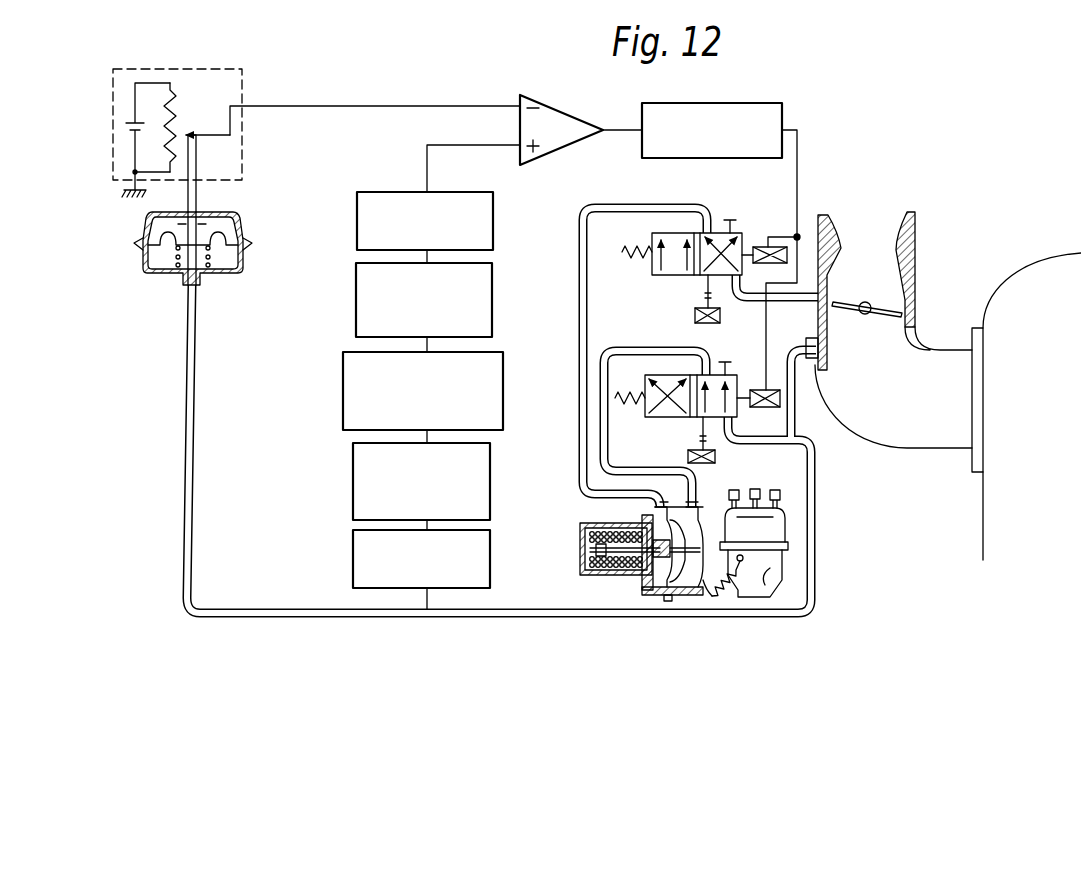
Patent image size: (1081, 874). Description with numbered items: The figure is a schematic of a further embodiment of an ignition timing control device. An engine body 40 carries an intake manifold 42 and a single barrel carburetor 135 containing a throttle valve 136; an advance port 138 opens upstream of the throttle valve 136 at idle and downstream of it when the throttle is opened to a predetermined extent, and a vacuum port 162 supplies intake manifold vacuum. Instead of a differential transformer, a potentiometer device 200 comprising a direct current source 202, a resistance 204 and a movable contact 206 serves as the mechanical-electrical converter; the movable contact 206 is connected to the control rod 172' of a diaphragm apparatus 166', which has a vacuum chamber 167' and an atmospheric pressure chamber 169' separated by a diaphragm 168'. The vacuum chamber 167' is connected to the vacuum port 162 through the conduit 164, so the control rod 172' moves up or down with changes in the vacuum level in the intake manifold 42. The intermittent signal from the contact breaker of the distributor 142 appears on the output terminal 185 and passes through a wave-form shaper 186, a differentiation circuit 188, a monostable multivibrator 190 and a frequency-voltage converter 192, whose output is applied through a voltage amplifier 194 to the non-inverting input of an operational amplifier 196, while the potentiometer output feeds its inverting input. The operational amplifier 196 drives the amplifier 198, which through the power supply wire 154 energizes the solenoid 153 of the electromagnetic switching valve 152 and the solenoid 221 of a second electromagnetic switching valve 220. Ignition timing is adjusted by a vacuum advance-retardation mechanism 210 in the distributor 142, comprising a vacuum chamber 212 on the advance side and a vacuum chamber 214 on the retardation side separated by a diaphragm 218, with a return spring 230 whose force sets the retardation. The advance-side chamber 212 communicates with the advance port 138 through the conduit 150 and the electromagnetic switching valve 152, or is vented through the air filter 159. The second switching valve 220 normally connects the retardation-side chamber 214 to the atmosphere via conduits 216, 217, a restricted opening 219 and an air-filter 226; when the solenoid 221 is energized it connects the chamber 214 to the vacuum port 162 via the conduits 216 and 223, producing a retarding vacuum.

The engine body 40 is at (1036, 272).
The intake manifold 42 is at (908, 446).
The carburetor 135 is at (873, 216).
The throttle valve 136 is at (897, 310).
The advance port 138 is at (831, 302).
The distributor 142 is at (770, 568).
The conduit 150 is at (838, 256).
The electromagnetic switching valve 152 is at (668, 280).
The solenoid 153 is at (763, 247).
The power supply wire 154 is at (799, 176).
The air filter 159 is at (720, 316).
The vacuum port 162 is at (812, 358).
The conduit 164 is at (600, 620).
The diaphragm apparatus 166' is at (190, 271).
The vacuum chamber 167' is at (227, 272).
The diaphragm 168' is at (236, 234).
The atmospheric pressure chamber 169' is at (240, 213).
The control rod 172' is at (228, 173).
The output terminal 185 is at (742, 572).
The wave-form shaper 186 is at (353, 572).
The differentiation circuit 188 is at (353, 503).
The monostable multivibrator 190 is at (343, 412).
The frequency-voltage converter 192 is at (356, 328).
The voltage amplifier 194 is at (492, 244).
The operational amplifier 196 is at (548, 116).
The amplifier 198 is at (702, 112).
The potentiometer device 200 is at (157, 66).
The direct current source 202 is at (113, 127).
The resistance 204 is at (178, 112).
The movable contact 206 is at (186, 133).
The vacuum advance-retardation mechanism 210 is at (577, 548).
The vacuum chamber on the advance side 212 is at (646, 522).
The vacuum chamber on the retardation side 214 is at (732, 493).
The conduit 216 is at (631, 351).
The conduit 217 is at (700, 420).
The diaphragm 218 is at (645, 585).
The restricted opening 219 is at (724, 440).
The second electromagnetic switching valve 220 is at (661, 419).
The solenoid 221 is at (751, 390).
The conduit 223 is at (802, 456).
The air-filter 226 is at (688, 457).
The return spring 230 is at (588, 568).